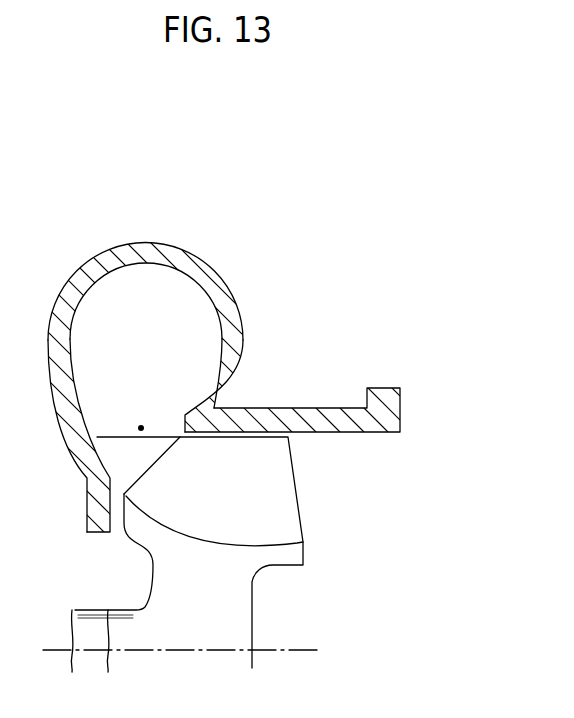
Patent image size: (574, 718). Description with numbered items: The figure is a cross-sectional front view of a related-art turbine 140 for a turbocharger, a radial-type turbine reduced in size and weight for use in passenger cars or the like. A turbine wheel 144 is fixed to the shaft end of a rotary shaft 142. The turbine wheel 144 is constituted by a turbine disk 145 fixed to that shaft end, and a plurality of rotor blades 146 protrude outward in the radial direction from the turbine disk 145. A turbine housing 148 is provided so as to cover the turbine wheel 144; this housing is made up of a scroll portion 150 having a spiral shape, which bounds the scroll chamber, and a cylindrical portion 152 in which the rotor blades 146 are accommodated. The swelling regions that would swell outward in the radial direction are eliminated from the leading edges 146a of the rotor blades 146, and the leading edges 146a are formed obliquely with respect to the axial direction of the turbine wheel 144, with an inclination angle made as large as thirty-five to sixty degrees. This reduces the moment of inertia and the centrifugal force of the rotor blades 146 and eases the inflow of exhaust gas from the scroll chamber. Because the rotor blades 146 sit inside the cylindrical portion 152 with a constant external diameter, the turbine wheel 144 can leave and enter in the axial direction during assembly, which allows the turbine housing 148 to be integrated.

The turbine for a turbocharger 140 is at (346, 272).
The rotary shaft 142 is at (88, 608).
The turbine wheel 144 is at (338, 553).
The turbine disk 145 is at (190, 640).
The rotor blades 146 is at (281, 506).
The leading edges 146a is at (160, 456).
The turbine housing 148 is at (261, 338).
The scroll portion 150 is at (160, 242).
The cylindrical portion 152 is at (292, 407).